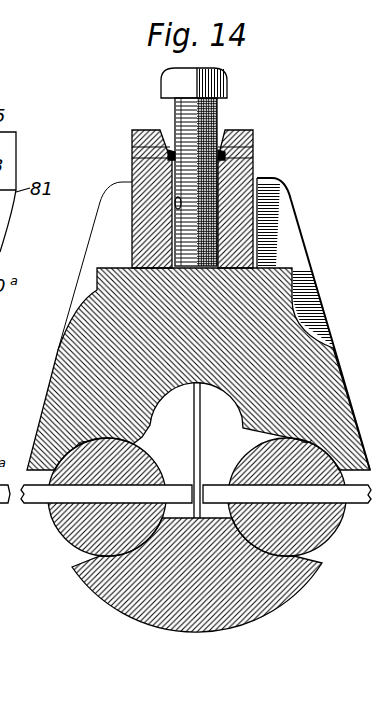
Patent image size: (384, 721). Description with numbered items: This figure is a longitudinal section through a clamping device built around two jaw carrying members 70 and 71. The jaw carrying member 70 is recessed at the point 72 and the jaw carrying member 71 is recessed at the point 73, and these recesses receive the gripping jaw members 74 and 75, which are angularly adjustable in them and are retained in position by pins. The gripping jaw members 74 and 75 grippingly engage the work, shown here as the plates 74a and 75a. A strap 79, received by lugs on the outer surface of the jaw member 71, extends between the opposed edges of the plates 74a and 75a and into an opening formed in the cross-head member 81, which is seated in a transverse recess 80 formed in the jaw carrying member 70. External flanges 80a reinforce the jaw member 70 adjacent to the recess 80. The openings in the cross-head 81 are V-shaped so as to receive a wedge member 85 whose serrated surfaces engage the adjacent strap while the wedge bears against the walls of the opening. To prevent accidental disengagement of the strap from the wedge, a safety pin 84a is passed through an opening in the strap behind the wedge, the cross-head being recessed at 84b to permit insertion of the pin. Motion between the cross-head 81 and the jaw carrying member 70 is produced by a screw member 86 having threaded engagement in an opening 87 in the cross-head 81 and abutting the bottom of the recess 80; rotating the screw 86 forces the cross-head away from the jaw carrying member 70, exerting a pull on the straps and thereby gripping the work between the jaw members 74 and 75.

The jaw carrying member 70 is at (55, 378).
The jaw carrying member 71 is at (259, 611).
The recess 72 is at (314, 442).
The recess 73 is at (110, 557).
The gripping jaw member 74 is at (242, 463).
The plate 74a is at (42, 497).
The gripping jaw member 75 is at (126, 548).
The plate 75a is at (347, 500).
The strap 79 is at (200, 428).
The transverse recess 80 is at (110, 264).
The external flange 80a is at (333, 307).
The cross-head member 81 is at (257, 174).
The safety pin 84a is at (218, 140).
The recess 84b is at (225, 148).
The wedge member 85 is at (170, 168).
The screw member 86 is at (227, 84).
The opening 87 is at (172, 196).